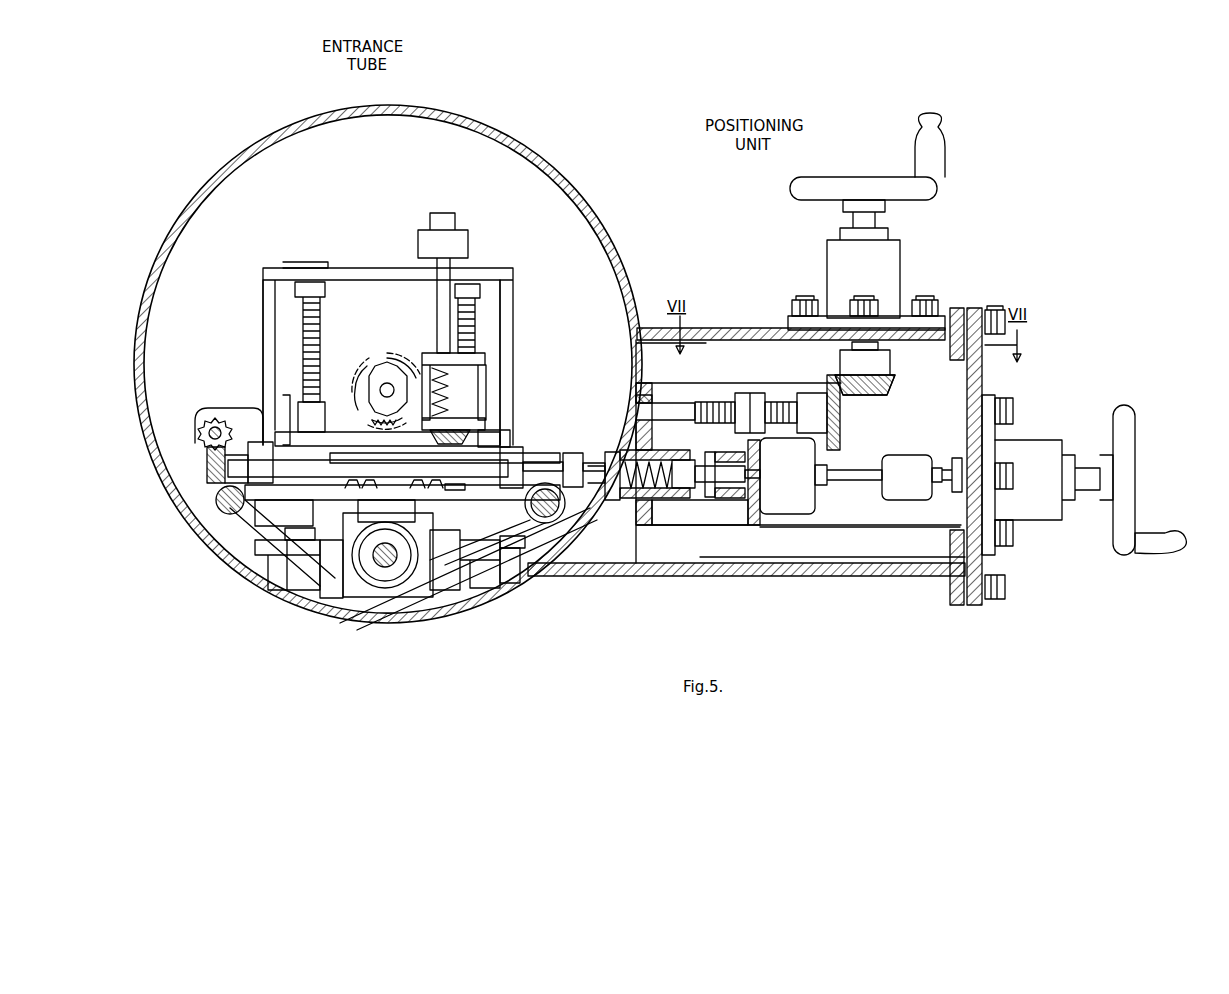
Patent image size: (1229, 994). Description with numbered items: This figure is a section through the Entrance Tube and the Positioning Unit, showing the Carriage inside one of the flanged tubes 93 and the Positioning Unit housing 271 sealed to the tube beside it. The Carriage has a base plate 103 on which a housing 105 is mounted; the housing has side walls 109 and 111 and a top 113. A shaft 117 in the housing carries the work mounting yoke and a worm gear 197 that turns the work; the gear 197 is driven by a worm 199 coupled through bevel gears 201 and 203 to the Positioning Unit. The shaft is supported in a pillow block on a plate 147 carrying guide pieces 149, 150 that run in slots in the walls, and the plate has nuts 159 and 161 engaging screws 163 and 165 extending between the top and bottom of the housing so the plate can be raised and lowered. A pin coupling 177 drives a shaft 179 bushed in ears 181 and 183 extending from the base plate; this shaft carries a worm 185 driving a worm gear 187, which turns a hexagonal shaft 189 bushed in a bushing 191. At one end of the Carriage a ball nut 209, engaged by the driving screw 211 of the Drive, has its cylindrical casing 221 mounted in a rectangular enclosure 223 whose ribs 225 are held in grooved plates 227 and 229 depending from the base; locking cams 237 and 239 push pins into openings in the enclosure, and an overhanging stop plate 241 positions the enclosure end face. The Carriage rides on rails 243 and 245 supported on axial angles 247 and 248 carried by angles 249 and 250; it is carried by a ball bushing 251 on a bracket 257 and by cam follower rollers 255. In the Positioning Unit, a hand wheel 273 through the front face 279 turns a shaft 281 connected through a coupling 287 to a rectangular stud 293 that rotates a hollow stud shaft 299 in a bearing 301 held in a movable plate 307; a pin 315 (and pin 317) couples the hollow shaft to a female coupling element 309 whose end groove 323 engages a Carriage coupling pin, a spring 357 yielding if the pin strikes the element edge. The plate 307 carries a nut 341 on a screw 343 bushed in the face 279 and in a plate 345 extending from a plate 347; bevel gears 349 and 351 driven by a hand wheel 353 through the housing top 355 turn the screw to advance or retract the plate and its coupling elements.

The flanged tube 93 is at (542, 153).
The base plate 103 is at (482, 498).
The housing 105 is at (388, 344).
The side wall 109 is at (514, 290).
The side wall 111 is at (262, 300).
The top 113 is at (347, 268).
The shaft or pin 117 is at (390, 386).
The plate 147 is at (336, 434).
The guide piece 149 is at (486, 420).
The guide piece 150 is at (286, 405).
The nut 159 is at (510, 442).
The nut 161 is at (325, 408).
The screw 163 is at (454, 298).
The screw 165 is at (321, 309).
The pin coupling 177 is at (573, 453).
The shaft 179 is at (558, 460).
The ear 181 is at (514, 452).
The ear 183 is at (260, 449).
The worm 185 is at (207, 468).
The worm gear 187 is at (198, 435).
The shaft 189 is at (220, 423).
The bushing 191 is at (200, 445).
The worm gear 197 is at (352, 368).
The worm 199 is at (438, 394).
The bevel gear 201 is at (418, 454).
The bevel gear 203 is at (460, 476).
The ball nut 209 is at (383, 598).
The driving screw 211 is at (332, 570).
The cylindrical casing 221 is at (400, 575).
The rectangular enclosure 223 is at (370, 585).
The rib 225 is at (285, 548).
The grooved plate 227 is at (342, 498).
The grooved plate 229 is at (480, 578).
The locking cam 237 is at (378, 476).
The locking cam 239 is at (422, 473).
The stop plate 241 is at (386, 511).
The rail 243 is at (564, 518).
The rail 245 is at (230, 504).
The angle 247 is at (510, 584).
The angle 248 is at (300, 574).
The angle 249 is at (526, 577).
The angle 250 is at (255, 525).
The ball bushing 251 is at (566, 502).
The cam follower roller 255 is at (220, 496).
The bracket 257 is at (562, 529).
The housing 271 is at (932, 576).
The hand wheel 273 is at (1134, 467).
The front face 279 is at (983, 380).
The shaft or pin 281 is at (954, 493).
The coupling 287 is at (892, 497).
The stud 293 is at (754, 474).
The hollow stud shaft 299 is at (736, 456).
The bearing 301 is at (820, 466).
The movable plate 307 is at (758, 452).
The female coupling element 309 is at (662, 448).
The pin 315 is at (720, 490).
The pin 317 is at (679, 454).
The groove 323 is at (612, 452).
The nut 341 is at (769, 398).
The screw 343 is at (788, 402).
The plate 345 is at (642, 386).
The plate 347 is at (904, 524).
The beveled gear 349 is at (893, 378).
The beveled gear 351 is at (840, 438).
The hand wheel 353 is at (937, 188).
The top 355 is at (946, 314).
The spring 357 is at (668, 488).